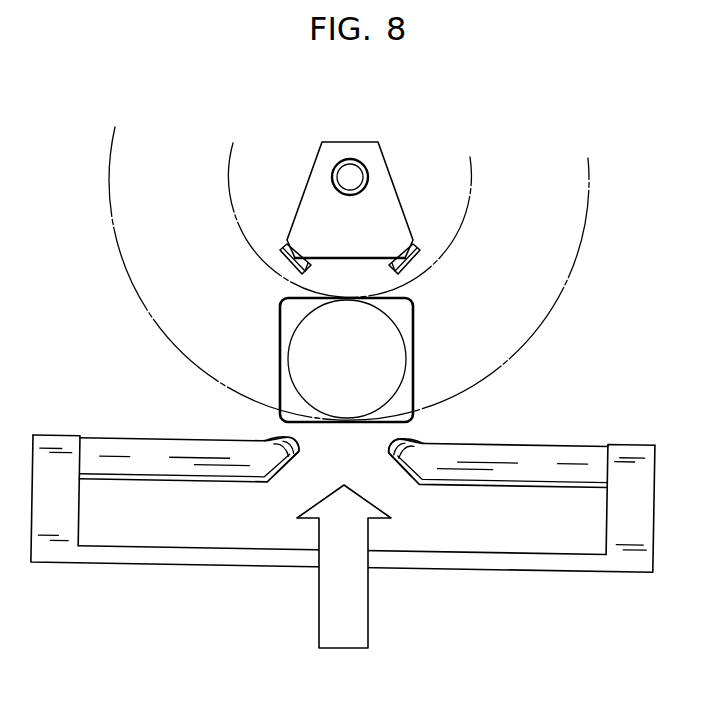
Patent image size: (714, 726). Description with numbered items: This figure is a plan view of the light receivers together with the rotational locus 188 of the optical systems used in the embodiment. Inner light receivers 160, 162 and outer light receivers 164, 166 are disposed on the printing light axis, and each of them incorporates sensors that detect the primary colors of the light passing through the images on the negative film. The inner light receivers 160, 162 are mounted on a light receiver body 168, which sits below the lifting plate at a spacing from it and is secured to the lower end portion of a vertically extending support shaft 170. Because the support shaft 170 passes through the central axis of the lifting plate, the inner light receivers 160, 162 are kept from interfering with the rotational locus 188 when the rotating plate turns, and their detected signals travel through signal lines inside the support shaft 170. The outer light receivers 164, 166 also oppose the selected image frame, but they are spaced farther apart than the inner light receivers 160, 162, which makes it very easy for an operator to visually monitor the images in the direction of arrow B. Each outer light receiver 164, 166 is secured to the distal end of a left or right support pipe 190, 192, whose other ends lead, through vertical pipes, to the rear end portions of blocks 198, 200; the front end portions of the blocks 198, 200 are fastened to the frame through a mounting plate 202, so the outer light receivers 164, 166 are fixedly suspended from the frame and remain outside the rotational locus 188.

The inner light receiver 160 is at (300, 286).
The inner light receiver 162 is at (390, 288).
The outer light receiver 164 is at (300, 437).
The outer light receiver 166 is at (393, 433).
The light receiver body 168 is at (401, 210).
The support shaft 170 is at (365, 167).
The rotational locus 188 is at (541, 343).
The support pipe 190 is at (188, 448).
The support pipe 192 is at (532, 455).
The block 198 is at (73, 510).
The block 200 is at (613, 517).
The mounting plate 202 is at (512, 572).
The arrow B is at (368, 592).